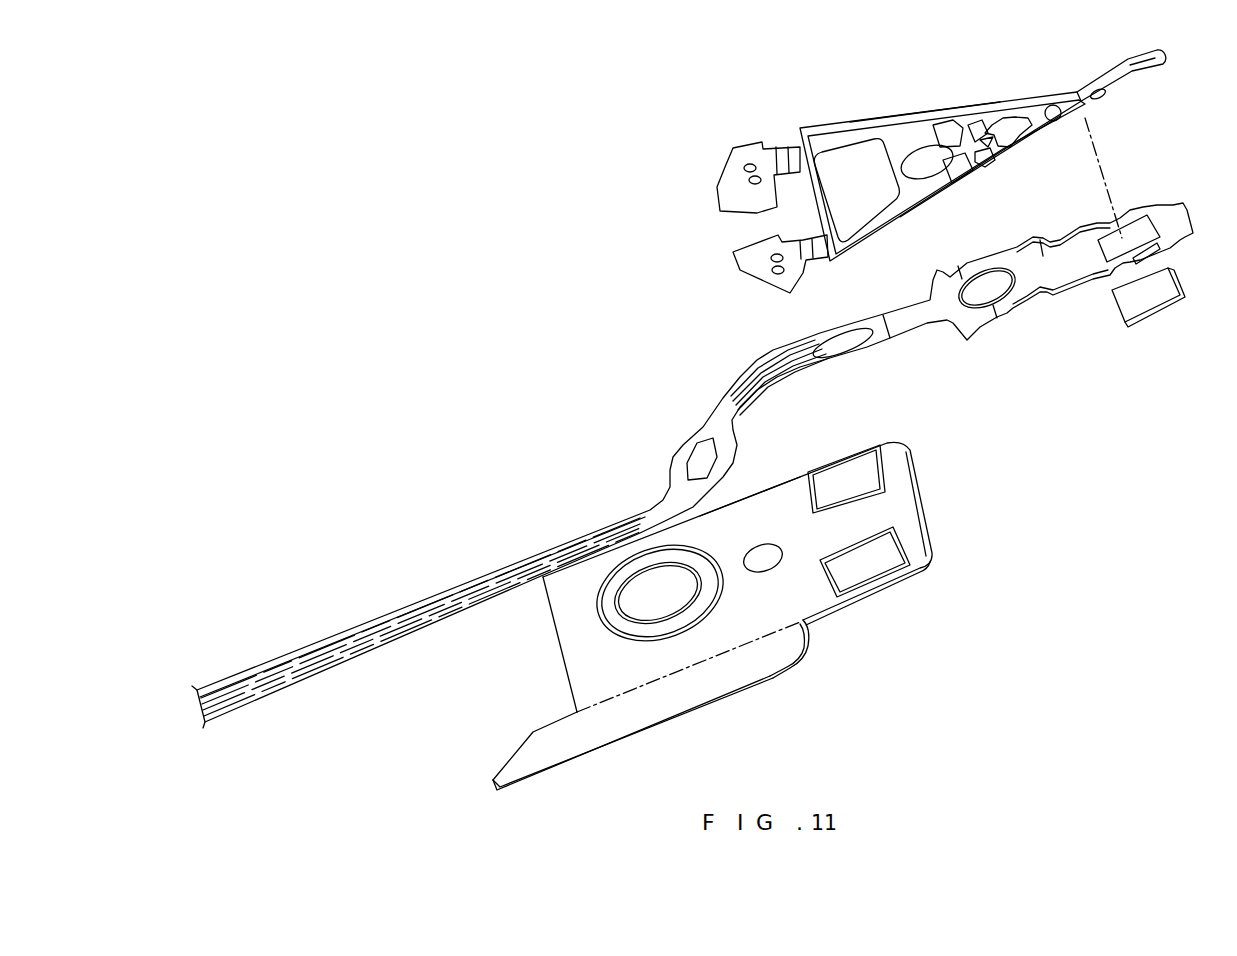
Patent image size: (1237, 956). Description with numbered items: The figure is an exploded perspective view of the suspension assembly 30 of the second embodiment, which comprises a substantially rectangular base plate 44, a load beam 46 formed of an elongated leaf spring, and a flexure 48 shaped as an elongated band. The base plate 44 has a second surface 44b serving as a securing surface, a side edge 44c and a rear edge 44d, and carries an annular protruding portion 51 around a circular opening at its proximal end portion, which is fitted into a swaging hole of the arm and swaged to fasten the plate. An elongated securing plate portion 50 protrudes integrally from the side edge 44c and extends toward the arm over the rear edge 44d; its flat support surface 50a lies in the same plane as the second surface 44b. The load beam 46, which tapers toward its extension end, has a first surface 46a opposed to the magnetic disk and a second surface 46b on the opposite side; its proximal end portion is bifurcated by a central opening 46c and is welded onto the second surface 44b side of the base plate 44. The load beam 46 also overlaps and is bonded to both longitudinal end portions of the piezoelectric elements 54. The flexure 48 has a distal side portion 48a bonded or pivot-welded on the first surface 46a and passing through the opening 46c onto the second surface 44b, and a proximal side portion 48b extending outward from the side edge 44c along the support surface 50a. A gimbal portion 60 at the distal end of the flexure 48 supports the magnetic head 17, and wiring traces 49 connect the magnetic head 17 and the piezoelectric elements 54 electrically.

The suspension assembly 30 is at (614, 285).
The load beam 46 is at (893, 132).
The first surface 46a is at (947, 187).
The second surface 46b is at (918, 132).
The opening 46c is at (780, 186).
The flexure 48 is at (733, 382).
The distal side portion 48a is at (912, 325).
The proximal side portion 48b is at (383, 622).
The wiring traces 49 is at (428, 602).
The gimbal portion 60 is at (1136, 233).
The magnetic head 17 is at (1157, 314).
The base plate 44 is at (820, 604).
The second surface 44b is at (775, 480).
The side edge 44c is at (786, 670).
The rear edge 44d is at (556, 632).
The securing plate portion 50 is at (677, 703).
The support surface 50a is at (587, 738).
The annular protruding portion 51 is at (623, 623).
The piezoelectric elements 54 is at (842, 472).